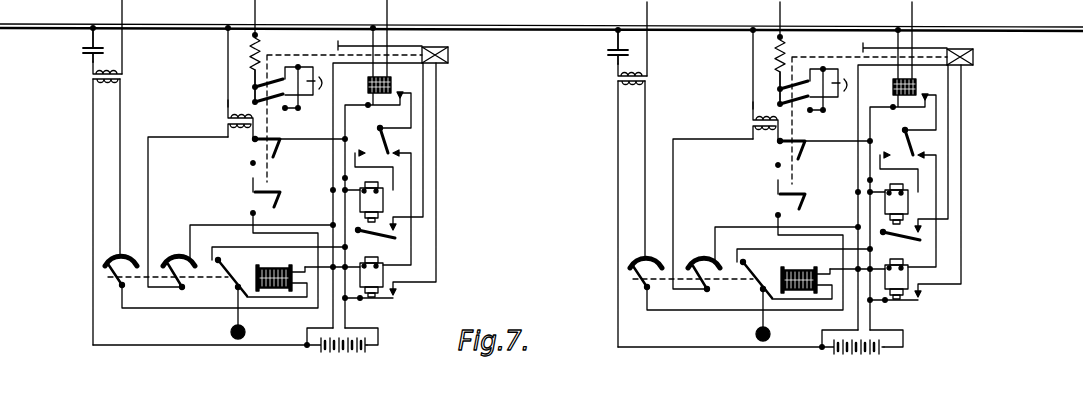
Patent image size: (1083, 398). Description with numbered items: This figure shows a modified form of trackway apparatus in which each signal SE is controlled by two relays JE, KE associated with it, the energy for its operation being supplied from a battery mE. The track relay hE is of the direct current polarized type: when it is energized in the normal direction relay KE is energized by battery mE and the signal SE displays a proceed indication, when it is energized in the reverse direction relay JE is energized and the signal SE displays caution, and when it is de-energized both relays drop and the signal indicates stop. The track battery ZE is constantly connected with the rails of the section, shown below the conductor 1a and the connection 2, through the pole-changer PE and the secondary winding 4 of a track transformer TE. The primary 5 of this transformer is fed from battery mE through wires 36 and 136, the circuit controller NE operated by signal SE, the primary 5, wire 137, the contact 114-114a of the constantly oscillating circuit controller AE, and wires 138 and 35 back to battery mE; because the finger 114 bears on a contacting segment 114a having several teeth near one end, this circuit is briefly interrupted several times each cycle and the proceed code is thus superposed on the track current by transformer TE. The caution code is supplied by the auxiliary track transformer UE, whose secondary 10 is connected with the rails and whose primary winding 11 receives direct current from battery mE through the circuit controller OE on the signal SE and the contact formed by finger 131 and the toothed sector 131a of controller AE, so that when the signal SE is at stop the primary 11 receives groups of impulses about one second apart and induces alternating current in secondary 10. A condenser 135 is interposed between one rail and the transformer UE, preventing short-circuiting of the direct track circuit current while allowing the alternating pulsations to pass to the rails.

The trolley conductor 1a is at (565, 16).
The resistance connection 2 is at (874, 9).
The secondary winding of track transformer T 4 is at (754, 109).
The primary of transformer T 5 is at (519, 151).
The secondary of auxiliary track transformer U 10 is at (638, 69).
The primary winding of transformer U 11 is at (629, 88).
The wire 35 is at (822, 335).
The wire 36 is at (905, 336).
The finger 114 is at (697, 285).
The contacting segment 114a is at (711, 256).
The finger 131 is at (635, 270).
The sector 131a is at (635, 254).
The condenser 135 is at (608, 53).
The wire 136 is at (834, 143).
The wire 137 is at (693, 185).
The wire 138 is at (734, 227).
The auxiliary track transformer UE is at (386, 73).
The pole-changer PE is at (778, 96).
The track transformer TE is at (753, 120).
The track battery ZE is at (849, 87).
The circuit controller NE is at (791, 149).
The circuit controller OE is at (521, 197).
The circuit controller AE is at (524, 274).
The track relay hE is at (893, 86).
The signal SE is at (980, 50).
The relay JE is at (967, 198).
The relay KE is at (967, 254).
The battery mE is at (595, 358).